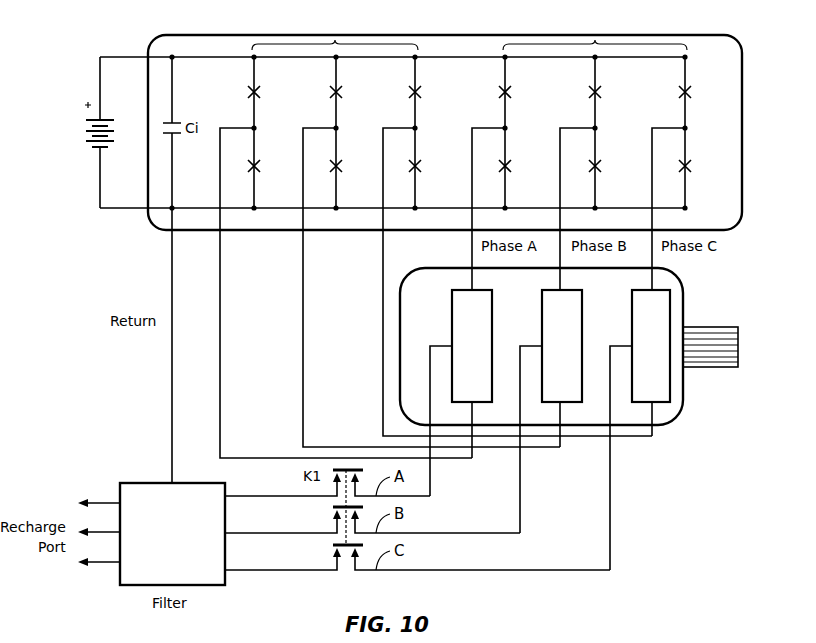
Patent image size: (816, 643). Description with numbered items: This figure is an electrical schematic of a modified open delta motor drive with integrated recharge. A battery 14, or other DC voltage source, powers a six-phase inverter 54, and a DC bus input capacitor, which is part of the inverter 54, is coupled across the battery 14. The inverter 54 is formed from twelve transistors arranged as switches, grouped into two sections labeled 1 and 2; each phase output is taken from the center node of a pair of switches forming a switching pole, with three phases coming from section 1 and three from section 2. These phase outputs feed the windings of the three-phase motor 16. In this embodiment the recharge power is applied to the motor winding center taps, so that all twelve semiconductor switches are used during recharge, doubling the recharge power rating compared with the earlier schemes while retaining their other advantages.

The battery 14 is at (82, 100).
The six-phase inverter 54 is at (470, 123).
The three-phase motor 16 is at (688, 306).
The first inverter section 1 is at (335, 33).
The second inverter section 2 is at (595, 33).